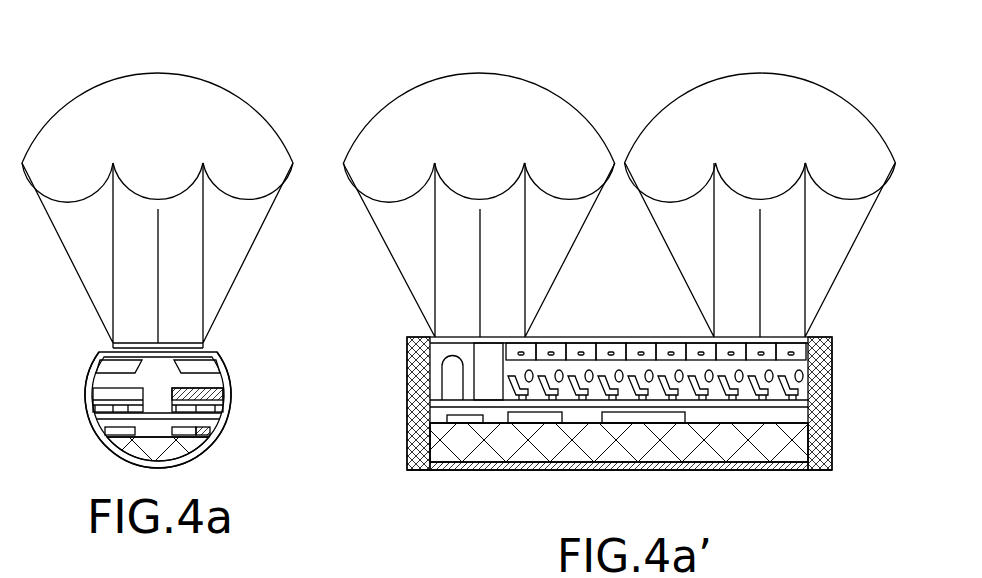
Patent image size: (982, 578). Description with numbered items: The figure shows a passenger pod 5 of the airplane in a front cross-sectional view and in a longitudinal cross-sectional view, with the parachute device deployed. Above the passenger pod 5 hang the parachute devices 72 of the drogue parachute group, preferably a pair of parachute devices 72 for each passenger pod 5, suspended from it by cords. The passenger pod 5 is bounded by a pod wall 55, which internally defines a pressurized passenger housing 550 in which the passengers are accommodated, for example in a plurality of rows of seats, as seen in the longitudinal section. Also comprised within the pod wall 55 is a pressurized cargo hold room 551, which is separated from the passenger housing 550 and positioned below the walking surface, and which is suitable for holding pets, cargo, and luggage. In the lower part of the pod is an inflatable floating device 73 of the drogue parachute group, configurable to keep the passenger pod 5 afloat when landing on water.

In FIG. 4a, the parachute device 72 is at (240, 86).
In FIG. 4a', the parachute device 72 is at (677, 76).
In FIG. 4a, the passenger pod 5 is at (248, 371).
In FIG. 4a', the passenger pod 5 is at (667, 430).
In FIG. 4a, the pod wall 55 is at (228, 423).
In FIG. 4a', the pod wall 55 is at (520, 472).
In FIG. 4a', the passenger housing 550 is at (790, 368).
In FIG. 4a', the cargo hold room 551 is at (773, 413).
In FIG. 4a', the inflatable floating device 73 is at (462, 442).